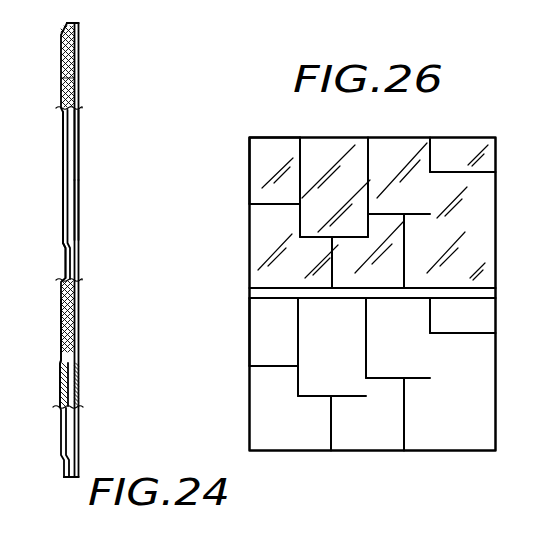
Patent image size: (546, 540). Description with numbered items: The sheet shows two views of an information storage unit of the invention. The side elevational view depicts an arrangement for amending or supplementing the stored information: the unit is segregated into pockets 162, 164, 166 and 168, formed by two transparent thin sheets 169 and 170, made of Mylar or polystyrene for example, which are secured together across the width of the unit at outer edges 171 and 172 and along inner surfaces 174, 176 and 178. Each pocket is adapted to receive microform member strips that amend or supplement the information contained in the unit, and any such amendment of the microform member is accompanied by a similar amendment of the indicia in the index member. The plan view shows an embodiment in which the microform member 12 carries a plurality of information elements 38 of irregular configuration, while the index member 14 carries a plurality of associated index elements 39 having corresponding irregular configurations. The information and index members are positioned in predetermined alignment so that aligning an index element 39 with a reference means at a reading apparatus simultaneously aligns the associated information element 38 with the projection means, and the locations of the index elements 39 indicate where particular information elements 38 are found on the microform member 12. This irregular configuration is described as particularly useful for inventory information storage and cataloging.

In FIG. 24, the microform member 12 is at (78, 55).
In FIG. 26, the microform member 12 is at (263, 244).
In FIG. 24, the index member 14 is at (78, 264).
In FIG. 26, the index member 14 is at (262, 417).
In FIG. 26, the information element 38 is at (272, 147).
In FIG. 26, the index element 39 is at (260, 337).
In FIG. 24, the pocket 162 is at (65, 78).
In FIG. 24, the pocket 164 is at (78, 204).
In FIG. 24, the pocket 166 is at (63, 317).
In FIG. 24, the pocket 168 is at (78, 392).
In FIG. 24, the transparent thin sheet 169 is at (78, 151).
In FIG. 24, the transparent thin sheet 170 is at (62, 191).
In FIG. 24, the outer edge 171 is at (73, 23).
In FIG. 24, the outer edge 172 is at (66, 478).
In FIG. 24, the inner surface 174 is at (62, 127).
In FIG. 24, the inner surface 176 is at (64, 251).
In FIG. 24, the inner surface 178 is at (61, 368).